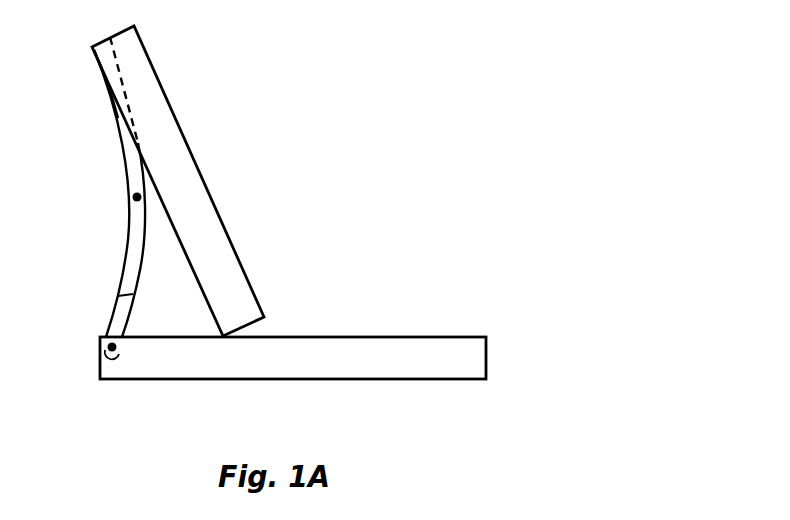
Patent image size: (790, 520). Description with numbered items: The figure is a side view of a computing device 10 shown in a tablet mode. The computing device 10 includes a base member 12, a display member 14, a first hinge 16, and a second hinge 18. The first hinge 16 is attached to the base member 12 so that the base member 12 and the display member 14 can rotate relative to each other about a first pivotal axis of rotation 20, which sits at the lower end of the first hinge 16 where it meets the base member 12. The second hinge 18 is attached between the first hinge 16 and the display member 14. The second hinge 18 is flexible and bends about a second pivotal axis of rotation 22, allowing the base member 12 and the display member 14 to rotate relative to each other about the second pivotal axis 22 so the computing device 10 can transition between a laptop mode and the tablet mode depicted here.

The computing device 10 is at (377, 87).
The base member 12 is at (352, 337).
The display member 14 is at (213, 199).
The first hinge 16 is at (130, 316).
The second hinge 18 is at (112, 108).
The first pivotal axis of rotation 20 is at (99, 339).
The second pivotal axis of rotation 22 is at (132, 197).